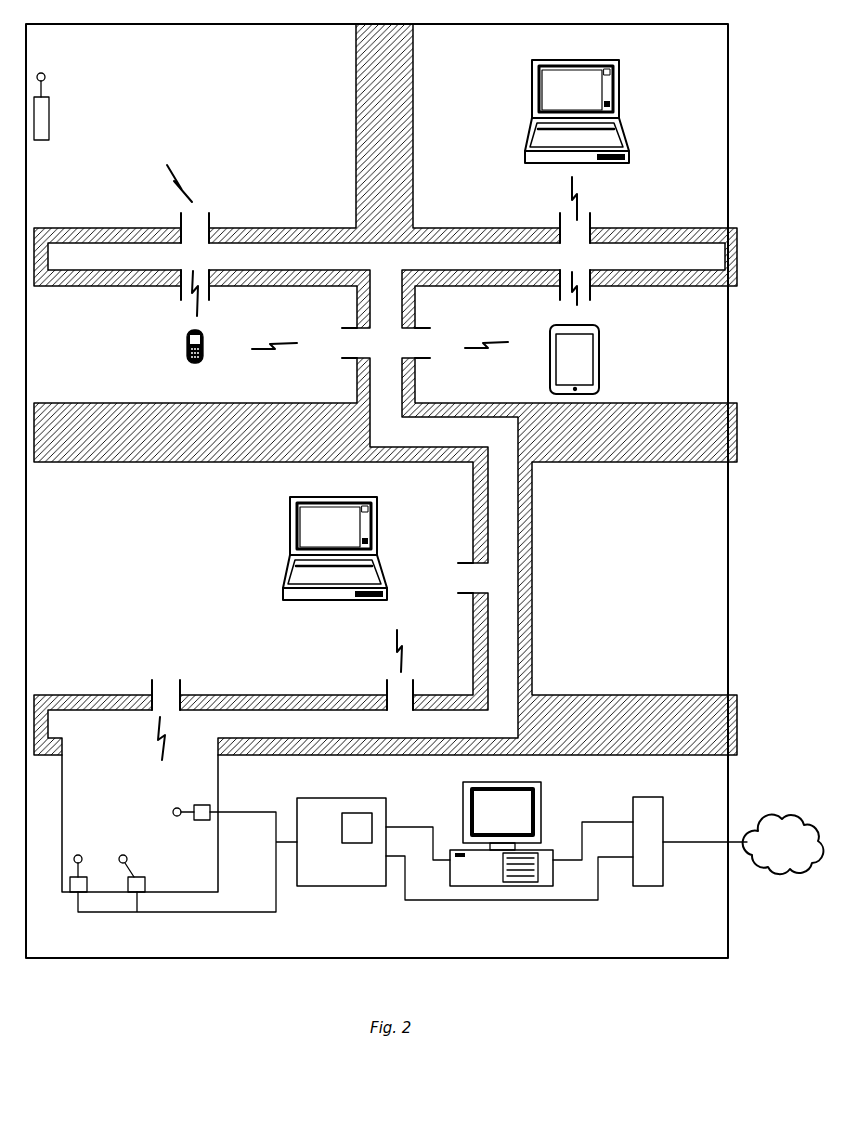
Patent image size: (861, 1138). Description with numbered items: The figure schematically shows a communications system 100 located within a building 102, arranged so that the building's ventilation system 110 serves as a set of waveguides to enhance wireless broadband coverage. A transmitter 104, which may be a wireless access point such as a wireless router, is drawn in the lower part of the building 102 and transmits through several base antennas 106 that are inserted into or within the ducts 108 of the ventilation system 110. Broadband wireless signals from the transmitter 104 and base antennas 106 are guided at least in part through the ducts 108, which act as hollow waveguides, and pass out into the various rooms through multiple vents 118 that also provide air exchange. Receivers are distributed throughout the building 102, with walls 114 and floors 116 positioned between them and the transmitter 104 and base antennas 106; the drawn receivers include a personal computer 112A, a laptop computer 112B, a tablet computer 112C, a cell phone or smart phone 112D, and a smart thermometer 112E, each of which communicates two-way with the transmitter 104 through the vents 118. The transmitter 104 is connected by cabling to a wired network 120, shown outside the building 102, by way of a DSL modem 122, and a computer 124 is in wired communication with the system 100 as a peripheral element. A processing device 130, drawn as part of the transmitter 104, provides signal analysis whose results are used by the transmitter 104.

The communications system 100 is at (753, 514).
The building 102 is at (728, 164).
The transmitter 104 is at (340, 887).
The base antennas 106 is at (80, 876).
The ducts 108 is at (405, 296).
The ventilation system 110 is at (532, 614).
The personal computer 112A is at (620, 110).
The laptop computer 112B is at (380, 548).
The tablet computer 112C is at (600, 350).
The cell phone or smart phone 112D is at (204, 347).
The smart thermometer 112E is at (50, 117).
The walls 114 is at (413, 145).
The floors 116 is at (196, 403).
The vents 118 is at (205, 215).
The wired network 120 is at (796, 812).
The DSL modem 122 is at (649, 887).
The computer 124 is at (541, 815).
The processing device 130 is at (357, 813).